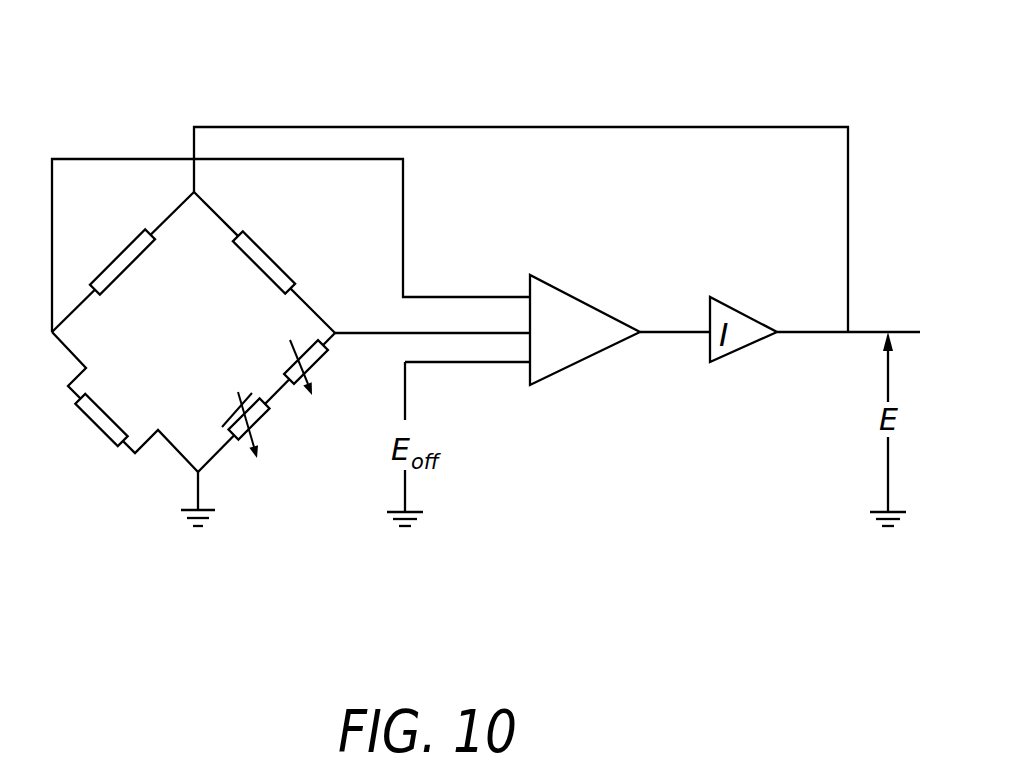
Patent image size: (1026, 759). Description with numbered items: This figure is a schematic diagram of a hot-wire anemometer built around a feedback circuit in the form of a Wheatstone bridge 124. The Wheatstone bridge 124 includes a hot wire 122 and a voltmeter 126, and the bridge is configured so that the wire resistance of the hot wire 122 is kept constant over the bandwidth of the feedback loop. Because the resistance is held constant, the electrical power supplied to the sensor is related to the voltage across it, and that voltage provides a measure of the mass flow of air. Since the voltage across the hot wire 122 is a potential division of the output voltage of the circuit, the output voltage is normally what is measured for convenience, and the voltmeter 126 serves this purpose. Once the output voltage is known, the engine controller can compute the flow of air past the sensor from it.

The hot wire 122 is at (113, 464).
The Wheatstone bridge 124 is at (342, 90).
The voltmeter 126 is at (607, 393).